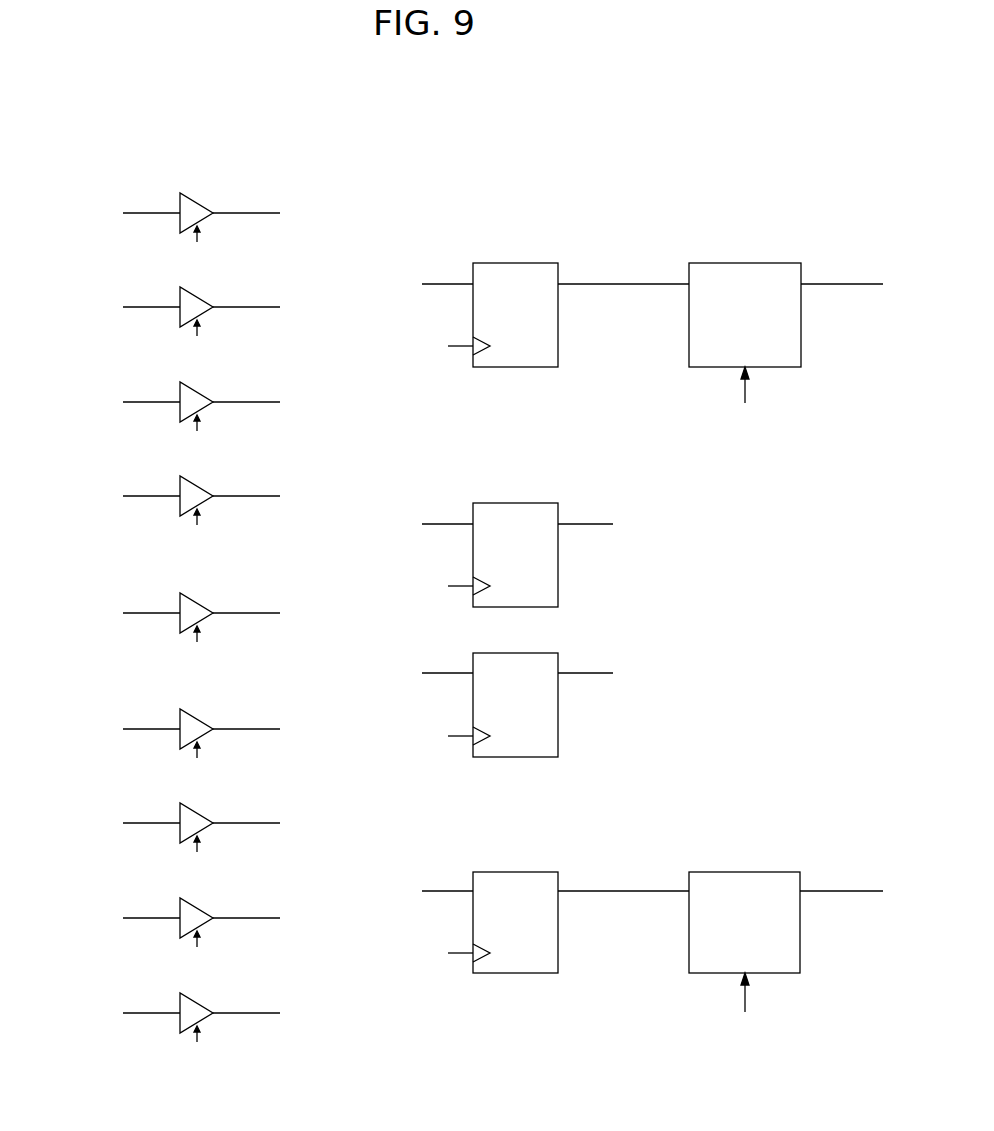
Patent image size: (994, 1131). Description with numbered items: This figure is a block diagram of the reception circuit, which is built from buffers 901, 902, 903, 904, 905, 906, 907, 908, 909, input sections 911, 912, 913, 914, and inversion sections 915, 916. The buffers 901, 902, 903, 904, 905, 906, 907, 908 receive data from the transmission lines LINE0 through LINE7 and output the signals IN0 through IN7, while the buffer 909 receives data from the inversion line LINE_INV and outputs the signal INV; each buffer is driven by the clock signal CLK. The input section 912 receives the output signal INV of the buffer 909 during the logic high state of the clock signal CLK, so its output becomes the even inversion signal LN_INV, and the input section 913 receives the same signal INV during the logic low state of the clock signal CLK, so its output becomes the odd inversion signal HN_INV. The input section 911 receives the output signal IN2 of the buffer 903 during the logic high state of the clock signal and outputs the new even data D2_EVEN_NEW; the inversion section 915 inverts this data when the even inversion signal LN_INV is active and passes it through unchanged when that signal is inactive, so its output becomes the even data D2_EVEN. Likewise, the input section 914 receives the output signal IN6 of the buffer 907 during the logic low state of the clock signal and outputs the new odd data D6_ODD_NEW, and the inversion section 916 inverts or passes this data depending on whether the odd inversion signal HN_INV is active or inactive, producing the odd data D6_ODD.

The buffer 901 is at (197, 202).
The buffer 902 is at (197, 296).
The buffer 903 is at (197, 391).
The buffer 904 is at (197, 485).
The buffer 905 is at (197, 718).
The buffer 906 is at (197, 812).
The buffer 907 is at (197, 907).
The buffer 908 is at (197, 1002).
The buffer 909 is at (197, 602).
The input section 911 is at (508, 263).
The input section 912 is at (508, 503).
The input section 913 is at (508, 653).
The input section 914 is at (508, 872).
The inversion section 915 is at (748, 263).
The inversion section 916 is at (748, 872).